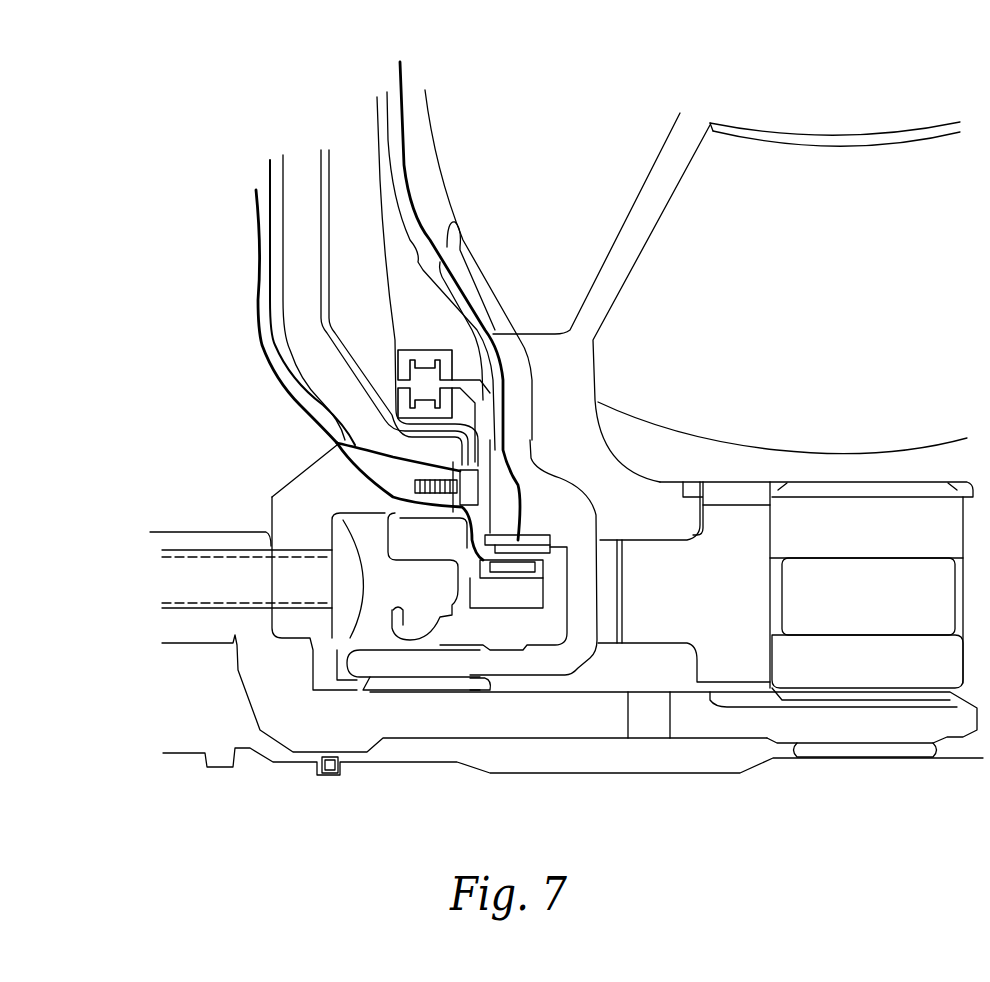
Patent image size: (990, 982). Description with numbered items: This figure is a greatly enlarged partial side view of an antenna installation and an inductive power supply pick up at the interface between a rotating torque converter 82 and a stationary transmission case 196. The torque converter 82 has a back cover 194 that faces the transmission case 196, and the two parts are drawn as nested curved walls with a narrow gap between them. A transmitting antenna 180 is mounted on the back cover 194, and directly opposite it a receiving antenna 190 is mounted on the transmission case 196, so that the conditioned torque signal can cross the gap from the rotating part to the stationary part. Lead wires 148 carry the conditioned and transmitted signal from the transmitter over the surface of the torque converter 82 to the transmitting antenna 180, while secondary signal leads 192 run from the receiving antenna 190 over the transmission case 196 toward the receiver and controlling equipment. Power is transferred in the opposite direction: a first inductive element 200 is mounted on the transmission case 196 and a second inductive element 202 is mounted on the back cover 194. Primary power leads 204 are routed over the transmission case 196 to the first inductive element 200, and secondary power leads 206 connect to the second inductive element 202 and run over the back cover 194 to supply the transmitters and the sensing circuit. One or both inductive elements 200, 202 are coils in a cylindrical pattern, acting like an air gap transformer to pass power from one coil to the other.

The torque converter 82 is at (818, 172).
The lead wires 148 is at (402, 77).
The transmitting antenna 180 is at (550, 543).
The receiving antenna 190 is at (508, 572).
The secondary signal leads 192 is at (262, 267).
The back cover 194 is at (442, 187).
The transmission case 196 is at (297, 305).
The first inductive element 200 is at (403, 408).
The second inductive element 202 is at (450, 337).
The primary power leads 204 is at (268, 177).
The secondary power leads 206 is at (377, 103).